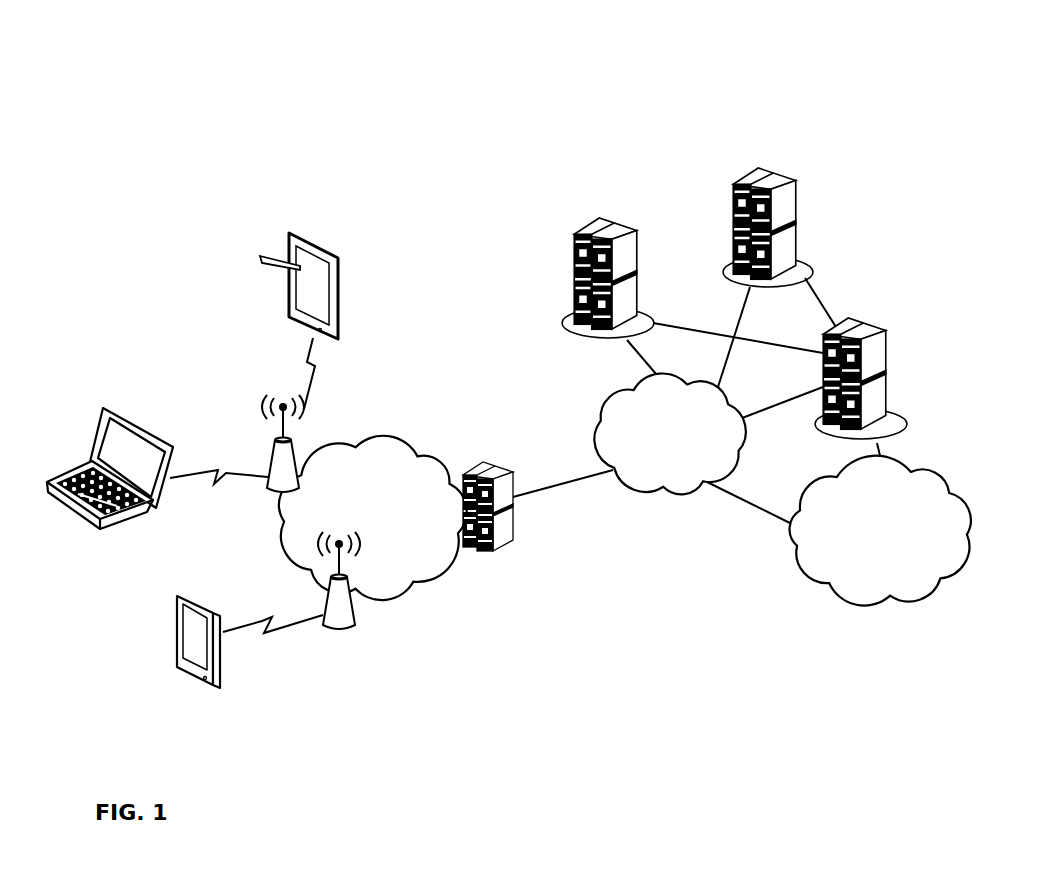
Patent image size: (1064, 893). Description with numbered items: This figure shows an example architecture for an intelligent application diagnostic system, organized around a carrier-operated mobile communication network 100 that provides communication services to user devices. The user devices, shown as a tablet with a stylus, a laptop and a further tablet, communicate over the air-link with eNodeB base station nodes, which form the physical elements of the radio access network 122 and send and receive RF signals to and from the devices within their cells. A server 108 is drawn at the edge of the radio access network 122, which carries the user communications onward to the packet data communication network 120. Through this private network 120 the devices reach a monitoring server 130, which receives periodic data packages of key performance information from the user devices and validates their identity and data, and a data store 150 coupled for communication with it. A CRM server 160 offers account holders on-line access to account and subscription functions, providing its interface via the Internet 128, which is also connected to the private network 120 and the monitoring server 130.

The mobile communication network 100 is at (121, 64).
The server of radio access network 108 is at (496, 494).
The packet data communication network 120 is at (733, 454).
The radio access network 122 is at (352, 448).
The Internet 128 is at (937, 480).
The monitoring server 130 is at (890, 378).
The data store 150 is at (797, 192).
The CRM server 160 is at (622, 236).